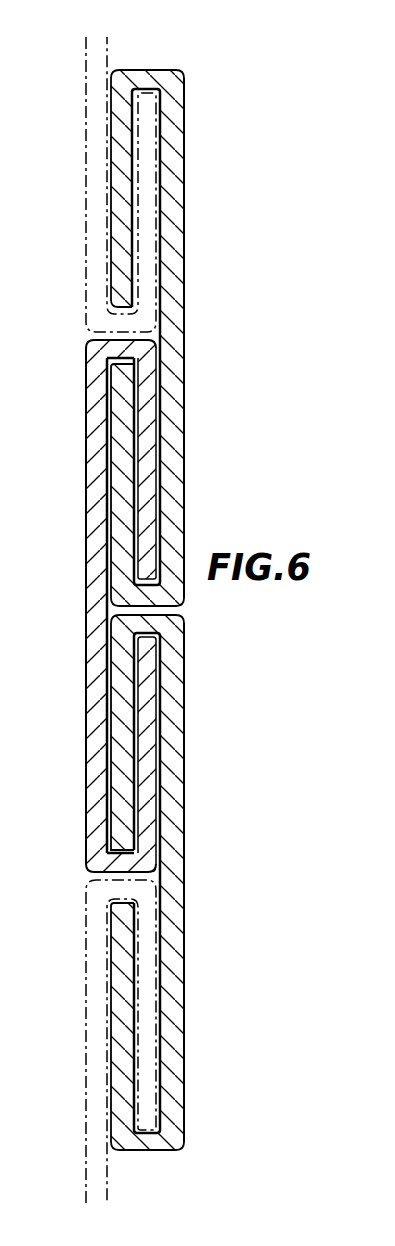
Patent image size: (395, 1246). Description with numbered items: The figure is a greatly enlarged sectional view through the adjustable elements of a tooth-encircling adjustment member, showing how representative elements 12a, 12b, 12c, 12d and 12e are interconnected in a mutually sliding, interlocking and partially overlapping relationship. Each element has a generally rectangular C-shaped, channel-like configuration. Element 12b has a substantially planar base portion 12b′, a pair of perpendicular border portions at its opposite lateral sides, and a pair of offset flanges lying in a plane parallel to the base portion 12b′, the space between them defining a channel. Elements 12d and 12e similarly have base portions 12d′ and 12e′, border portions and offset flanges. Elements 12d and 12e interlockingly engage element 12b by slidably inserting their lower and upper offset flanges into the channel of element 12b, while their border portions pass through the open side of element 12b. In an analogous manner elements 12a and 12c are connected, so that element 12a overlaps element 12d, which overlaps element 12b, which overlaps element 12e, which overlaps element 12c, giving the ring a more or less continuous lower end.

The adjustable element 12a is at (86, 262).
The adjustable element 12b is at (80, 617).
The base portion 12b′ is at (85, 518).
The adjustable element 12c is at (86, 955).
The adjustable element 12d is at (189, 325).
The base portion 12d′ is at (178, 327).
The adjustable element 12e is at (144, 899).
The base portion 12e′ is at (180, 757).